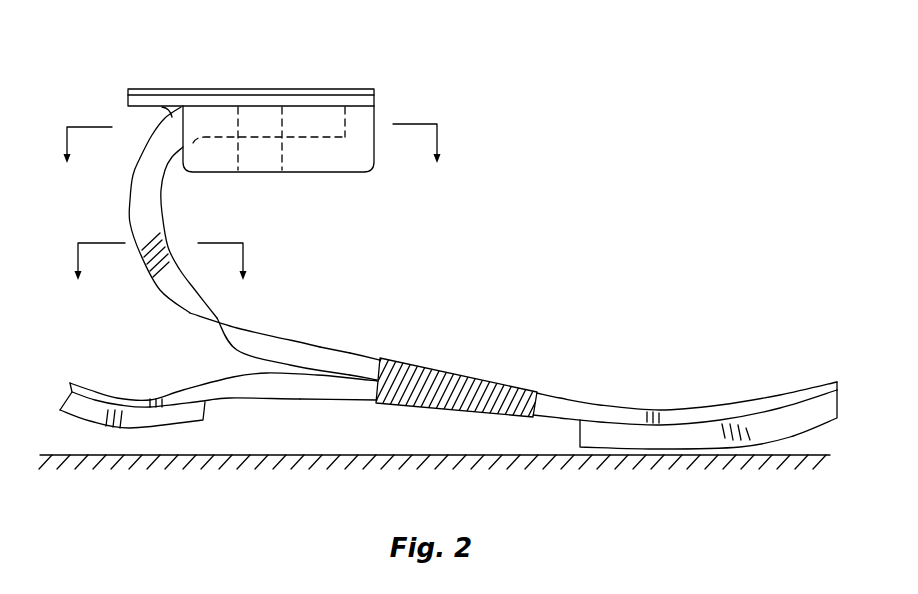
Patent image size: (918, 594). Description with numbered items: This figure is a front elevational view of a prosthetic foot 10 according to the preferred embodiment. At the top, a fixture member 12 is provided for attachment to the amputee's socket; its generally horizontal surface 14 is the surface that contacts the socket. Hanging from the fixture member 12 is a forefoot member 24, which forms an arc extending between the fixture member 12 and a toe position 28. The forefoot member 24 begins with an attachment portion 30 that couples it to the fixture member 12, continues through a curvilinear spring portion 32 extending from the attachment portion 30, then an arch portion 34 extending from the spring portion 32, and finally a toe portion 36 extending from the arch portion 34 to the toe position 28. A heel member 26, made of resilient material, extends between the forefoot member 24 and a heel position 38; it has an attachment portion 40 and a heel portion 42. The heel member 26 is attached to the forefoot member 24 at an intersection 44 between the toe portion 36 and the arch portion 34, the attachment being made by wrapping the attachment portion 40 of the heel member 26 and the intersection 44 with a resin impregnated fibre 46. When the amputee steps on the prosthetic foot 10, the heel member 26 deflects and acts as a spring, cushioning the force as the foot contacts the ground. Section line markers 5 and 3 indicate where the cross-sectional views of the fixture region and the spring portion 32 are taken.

The prosthetic foot 10 is at (464, 260).
The fixture member 12 is at (382, 79).
The generally horizontal surface 14 is at (327, 90).
The attachment portion 30 is at (213, 120).
The curvilinear spring portion 32 is at (145, 208).
The forefoot member 24 is at (238, 345).
The arch portion 34 is at (325, 360).
The intersection 44 is at (362, 366).
The resin impregnated fibre 46 is at (448, 372).
The heel member 26 is at (292, 386).
The attachment portion 40 is at (370, 388).
The heel position 38 is at (72, 383).
The heel portion 42 is at (127, 402).
The toe position 28 is at (837, 382).
The toe portion 36 is at (687, 417).
The section line 5- 5 is at (252, 157).
The section line 3- 3 is at (161, 276).